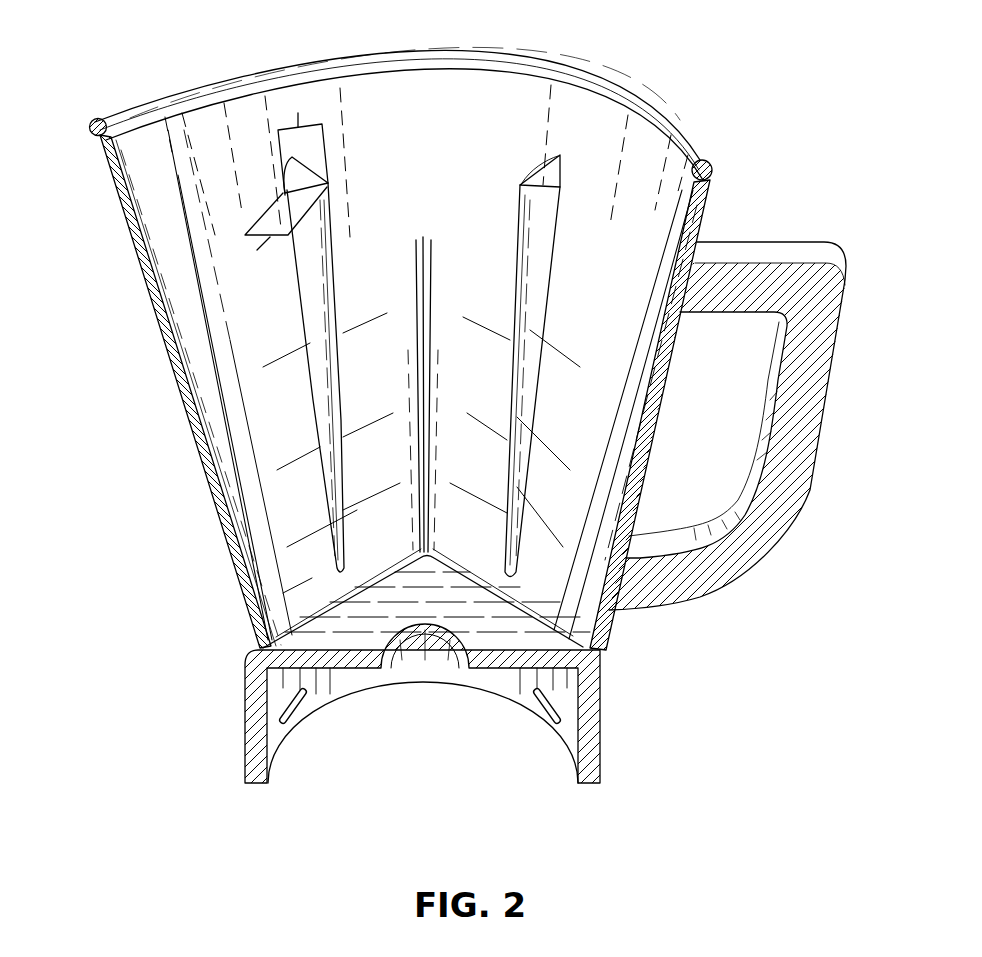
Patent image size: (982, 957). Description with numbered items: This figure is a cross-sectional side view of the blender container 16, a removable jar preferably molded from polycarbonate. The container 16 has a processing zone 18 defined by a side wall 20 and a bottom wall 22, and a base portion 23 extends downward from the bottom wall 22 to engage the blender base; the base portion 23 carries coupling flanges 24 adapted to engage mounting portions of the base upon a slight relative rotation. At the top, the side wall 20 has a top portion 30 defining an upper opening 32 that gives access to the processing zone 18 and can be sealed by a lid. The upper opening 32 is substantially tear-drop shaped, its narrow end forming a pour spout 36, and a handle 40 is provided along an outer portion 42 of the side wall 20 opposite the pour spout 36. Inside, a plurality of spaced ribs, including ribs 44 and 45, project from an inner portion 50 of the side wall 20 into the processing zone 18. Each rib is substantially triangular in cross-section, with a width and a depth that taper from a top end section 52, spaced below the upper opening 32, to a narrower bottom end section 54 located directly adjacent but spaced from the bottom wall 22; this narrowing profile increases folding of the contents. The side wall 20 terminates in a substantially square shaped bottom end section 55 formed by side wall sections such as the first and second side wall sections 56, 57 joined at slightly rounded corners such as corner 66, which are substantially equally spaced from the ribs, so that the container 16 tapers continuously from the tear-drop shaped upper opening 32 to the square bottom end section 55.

The blender container 16 is at (767, 77).
The processing zone 18 is at (488, 110).
The side wall 20 is at (177, 417).
The bottom wall 22 is at (317, 646).
The base portion 23 is at (597, 728).
The coupling flanges 24 is at (298, 702).
The top portion 30 is at (714, 166).
The upper opening 32 is at (644, 127).
The pour spout 36 is at (98, 119).
The handle 40 is at (807, 487).
The outer portion 42 is at (660, 393).
The spaced rib 44 is at (333, 278).
The spaced rib 45 is at (514, 305).
The inner portion 50 is at (419, 131).
The top end section 52 is at (552, 180).
The bottom end section 54 is at (523, 435).
The bottom end section 55 is at (280, 615).
The first side wall section 56 is at (278, 583).
The second side wall section 57 is at (446, 525).
The corner 66 is at (420, 457).